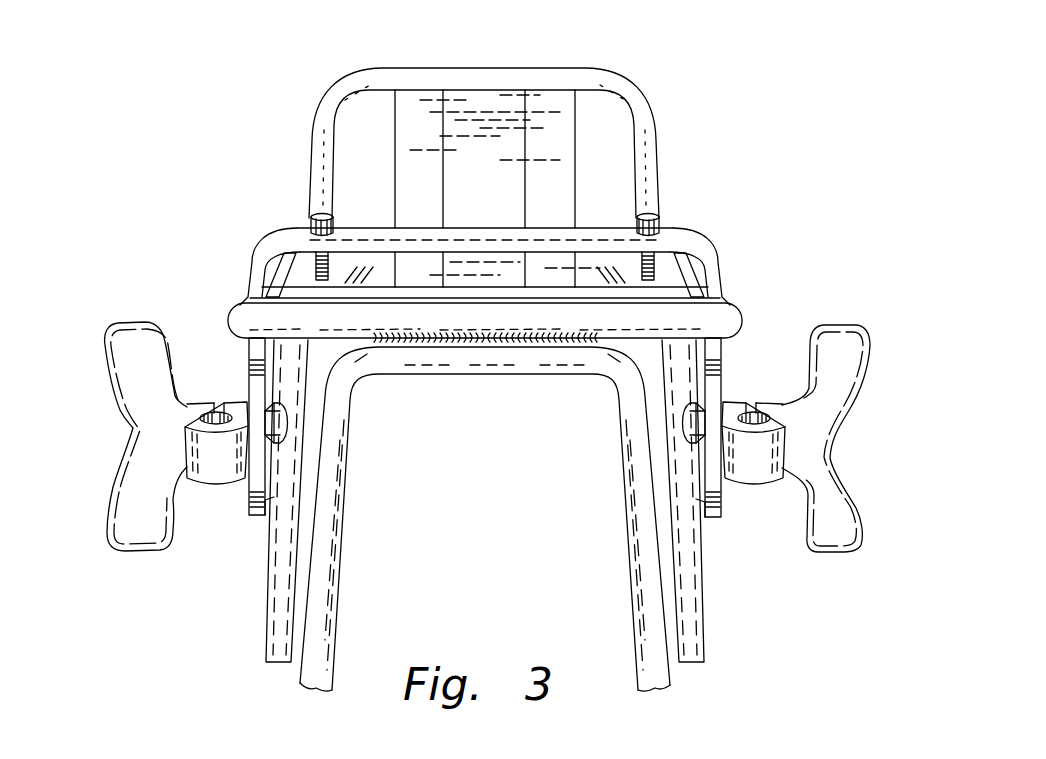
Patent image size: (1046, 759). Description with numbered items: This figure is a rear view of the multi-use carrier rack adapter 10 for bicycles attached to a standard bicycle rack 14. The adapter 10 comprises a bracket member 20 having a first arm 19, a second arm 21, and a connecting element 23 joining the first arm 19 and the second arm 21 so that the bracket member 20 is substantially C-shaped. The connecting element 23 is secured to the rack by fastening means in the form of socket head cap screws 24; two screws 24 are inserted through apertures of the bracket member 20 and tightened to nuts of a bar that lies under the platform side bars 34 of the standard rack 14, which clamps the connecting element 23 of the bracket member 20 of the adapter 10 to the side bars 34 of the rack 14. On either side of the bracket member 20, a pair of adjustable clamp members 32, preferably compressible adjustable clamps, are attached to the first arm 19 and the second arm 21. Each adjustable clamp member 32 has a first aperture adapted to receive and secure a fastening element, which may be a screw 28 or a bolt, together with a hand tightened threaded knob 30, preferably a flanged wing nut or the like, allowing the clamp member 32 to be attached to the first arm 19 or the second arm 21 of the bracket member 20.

The multi-use carrier rack adapter 10 is at (735, 224).
The standard bicycle rack 14 is at (245, 140).
The first arm 19 is at (250, 358).
The bracket member 20 is at (298, 228).
The second arm 21 is at (722, 371).
The connecting element 23 is at (455, 232).
The socket head cap screws 24 is at (331, 219).
The screw 28 is at (283, 423).
The hand tightened threaded knob 30 is at (133, 468).
The adjustable clamp member 32 is at (213, 472).
The platform side bars 34 is at (262, 291).